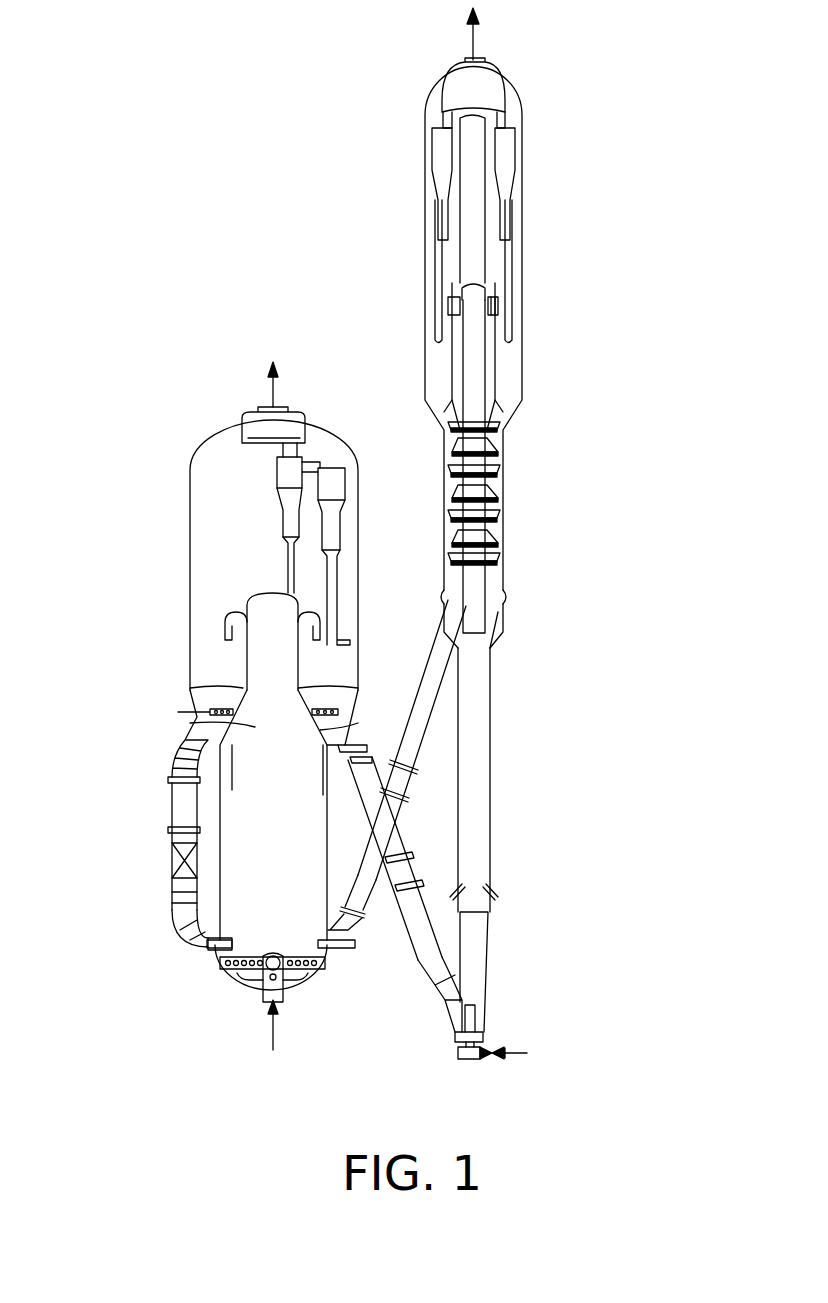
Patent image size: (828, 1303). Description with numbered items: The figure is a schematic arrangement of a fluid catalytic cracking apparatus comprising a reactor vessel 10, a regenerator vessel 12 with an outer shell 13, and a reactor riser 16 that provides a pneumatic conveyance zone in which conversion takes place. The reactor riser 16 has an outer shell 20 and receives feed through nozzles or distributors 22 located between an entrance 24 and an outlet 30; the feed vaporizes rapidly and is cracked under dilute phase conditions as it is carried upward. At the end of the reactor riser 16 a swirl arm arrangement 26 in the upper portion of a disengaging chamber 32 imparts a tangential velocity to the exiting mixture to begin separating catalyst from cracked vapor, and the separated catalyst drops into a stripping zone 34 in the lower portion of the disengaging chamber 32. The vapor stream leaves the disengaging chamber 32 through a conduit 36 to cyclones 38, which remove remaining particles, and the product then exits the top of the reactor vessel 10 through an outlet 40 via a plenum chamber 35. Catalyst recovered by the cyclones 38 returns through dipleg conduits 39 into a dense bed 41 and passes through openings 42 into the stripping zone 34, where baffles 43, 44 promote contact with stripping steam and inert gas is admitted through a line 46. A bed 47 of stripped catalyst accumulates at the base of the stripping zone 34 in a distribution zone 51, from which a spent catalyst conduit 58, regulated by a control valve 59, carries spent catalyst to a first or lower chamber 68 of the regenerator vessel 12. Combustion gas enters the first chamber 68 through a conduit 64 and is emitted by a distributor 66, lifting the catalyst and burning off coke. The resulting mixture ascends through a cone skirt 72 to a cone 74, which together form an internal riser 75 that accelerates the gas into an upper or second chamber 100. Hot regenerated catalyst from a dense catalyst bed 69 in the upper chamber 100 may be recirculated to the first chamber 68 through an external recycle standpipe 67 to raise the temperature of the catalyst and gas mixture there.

The reactor vessel 10 is at (590, 360).
The regenerator vessel 12 is at (128, 615).
The outer shell 13 is at (193, 770).
The reactor riser 16 is at (528, 783).
The outer shell 20 is at (490, 847).
The nozzles or distributors 22 is at (493, 890).
The entrance 24 is at (485, 990).
The swirl arm arrangement 26 is at (458, 298).
The outlet 30 is at (495, 315).
The disengaging chamber 32 is at (495, 358).
The stripping zone 34 is at (498, 478).
The plenum chamber 35 is at (488, 83).
The conduit 36 is at (477, 190).
The cyclones 38 is at (442, 145).
The dipleg conduits 39 is at (442, 307).
The outlet 40 is at (463, 63).
The dense bed 41 is at (458, 392).
The openings 42 is at (443, 407).
The baffles 43 is at (493, 513).
The baffles 44 is at (487, 490).
The line 46 is at (495, 587).
The bed 47 is at (445, 595).
The distribution zone 51 is at (495, 612).
The spent catalyst conduit 58 is at (418, 727).
The control valve 59 is at (363, 890).
The conduit 64 is at (272, 995).
The distributor 66 is at (282, 980).
The external recycle standpipe 67 is at (183, 814).
The first or lower chamber 68 is at (318, 892).
The dense catalyst bed 69 is at (190, 690).
The cone skirt 72 is at (333, 783).
The cone 74 is at (358, 723).
The internal riser 75 is at (253, 727).
The upper or second chamber 100 is at (205, 512).